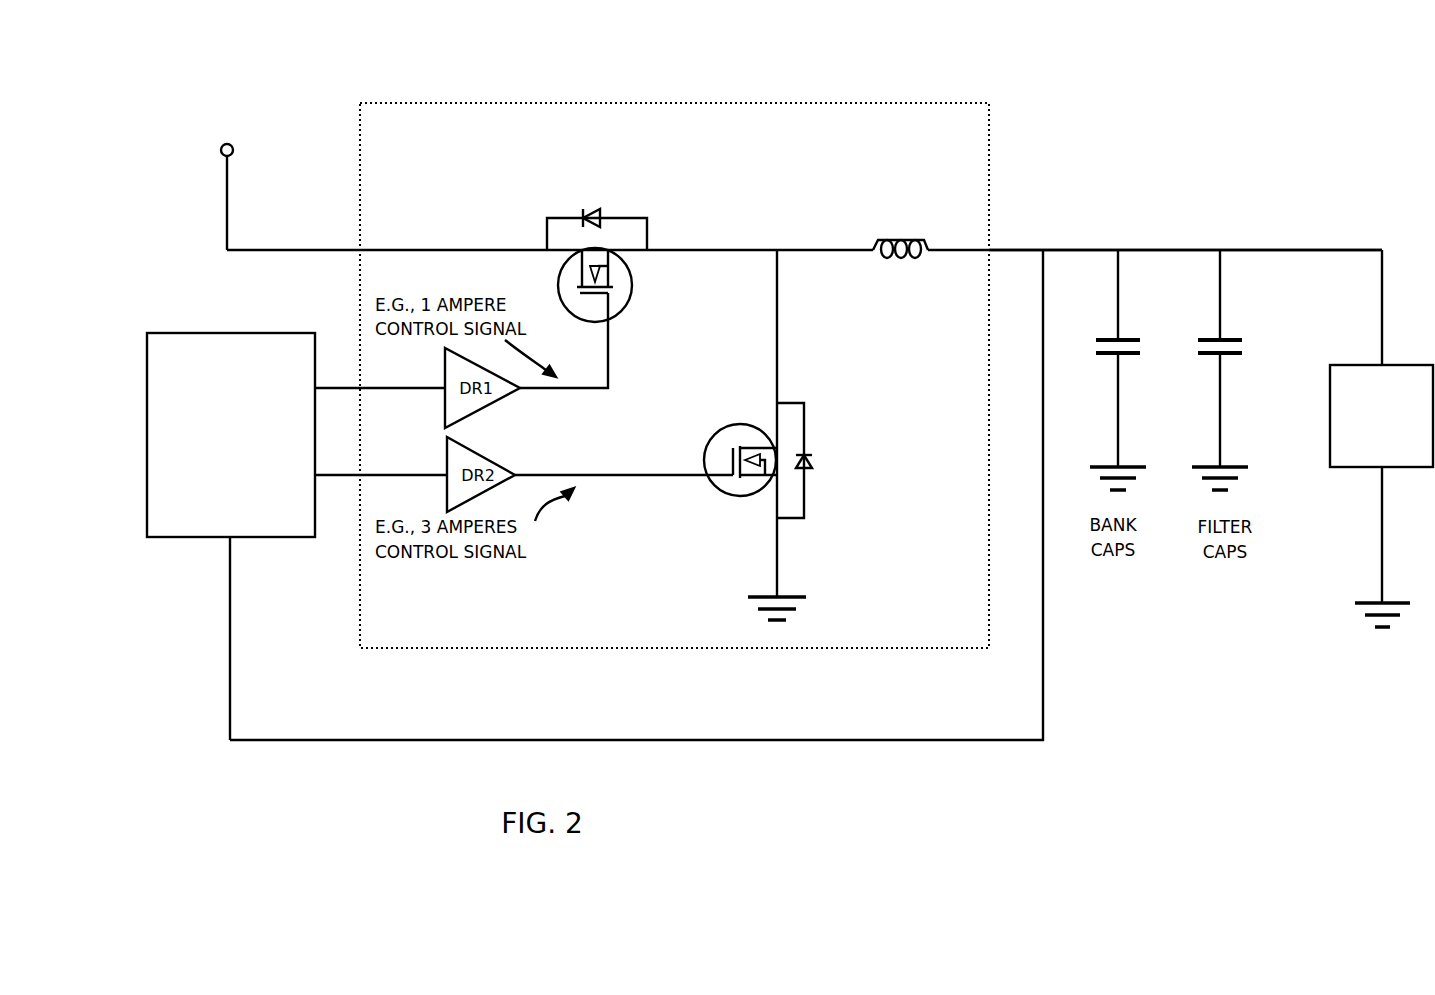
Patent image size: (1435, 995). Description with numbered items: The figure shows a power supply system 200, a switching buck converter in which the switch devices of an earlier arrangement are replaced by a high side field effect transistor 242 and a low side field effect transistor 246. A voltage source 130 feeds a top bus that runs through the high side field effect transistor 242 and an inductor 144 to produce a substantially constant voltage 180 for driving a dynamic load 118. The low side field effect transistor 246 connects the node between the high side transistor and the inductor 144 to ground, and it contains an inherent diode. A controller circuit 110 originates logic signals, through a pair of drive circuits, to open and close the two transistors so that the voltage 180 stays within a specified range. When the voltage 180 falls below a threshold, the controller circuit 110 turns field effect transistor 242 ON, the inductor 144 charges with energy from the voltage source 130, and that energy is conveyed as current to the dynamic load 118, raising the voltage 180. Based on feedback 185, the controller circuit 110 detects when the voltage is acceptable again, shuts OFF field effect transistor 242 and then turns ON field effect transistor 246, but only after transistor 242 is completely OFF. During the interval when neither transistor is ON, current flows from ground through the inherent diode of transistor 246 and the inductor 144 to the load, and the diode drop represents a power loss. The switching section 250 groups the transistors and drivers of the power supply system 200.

The voltage source 130 is at (216, 106).
The controller circuit 110 is at (216, 465).
The power supply system 200 is at (201, 694).
The field effect transistor 242 is at (659, 177).
The field effect transistor 246 is at (709, 524).
The inductor 144 is at (900, 233).
The voltage 180 is at (1177, 247).
The switching circuit 250 is at (803, 650).
The feedback 185 is at (897, 743).
The dynamic load 118 is at (1367, 440).